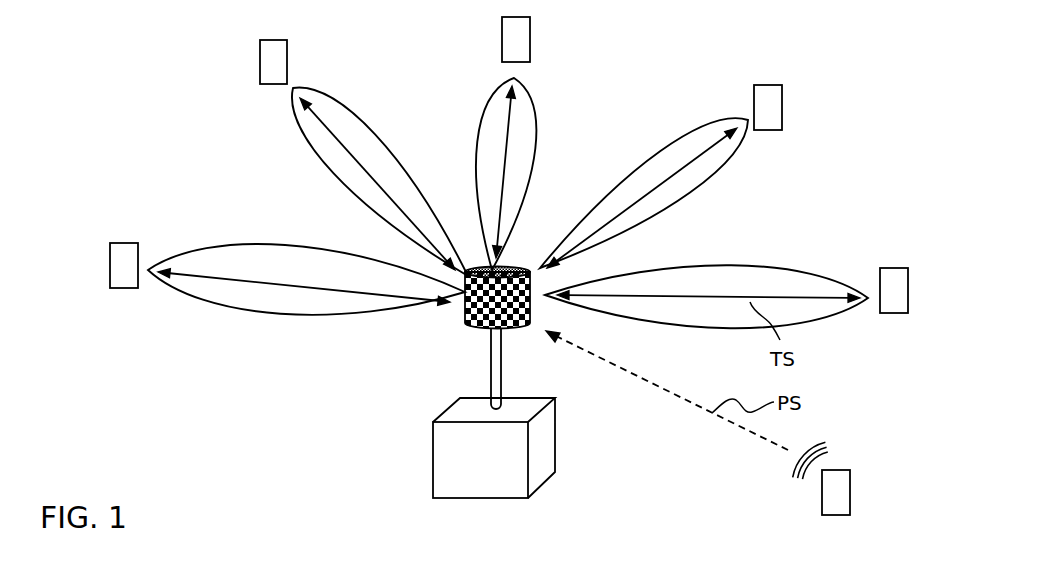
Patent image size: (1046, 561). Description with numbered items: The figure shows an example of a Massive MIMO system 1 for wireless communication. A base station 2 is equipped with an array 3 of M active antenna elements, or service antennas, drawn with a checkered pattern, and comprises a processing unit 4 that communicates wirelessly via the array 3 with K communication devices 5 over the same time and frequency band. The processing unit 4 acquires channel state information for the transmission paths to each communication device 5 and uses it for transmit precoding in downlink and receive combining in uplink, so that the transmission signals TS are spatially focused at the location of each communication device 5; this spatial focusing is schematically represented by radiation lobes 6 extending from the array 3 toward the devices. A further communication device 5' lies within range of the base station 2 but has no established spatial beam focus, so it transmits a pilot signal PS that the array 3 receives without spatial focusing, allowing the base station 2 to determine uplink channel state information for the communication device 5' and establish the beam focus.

The Massive MIMO system 1 is at (149, 83).
The base station 2 is at (405, 400).
The array 3 is at (472, 332).
The processing unit 4 is at (540, 452).
The communication devices 5 is at (498, 164).
The further communication device 5' is at (847, 478).
The radiation lobes 6 is at (746, 270).